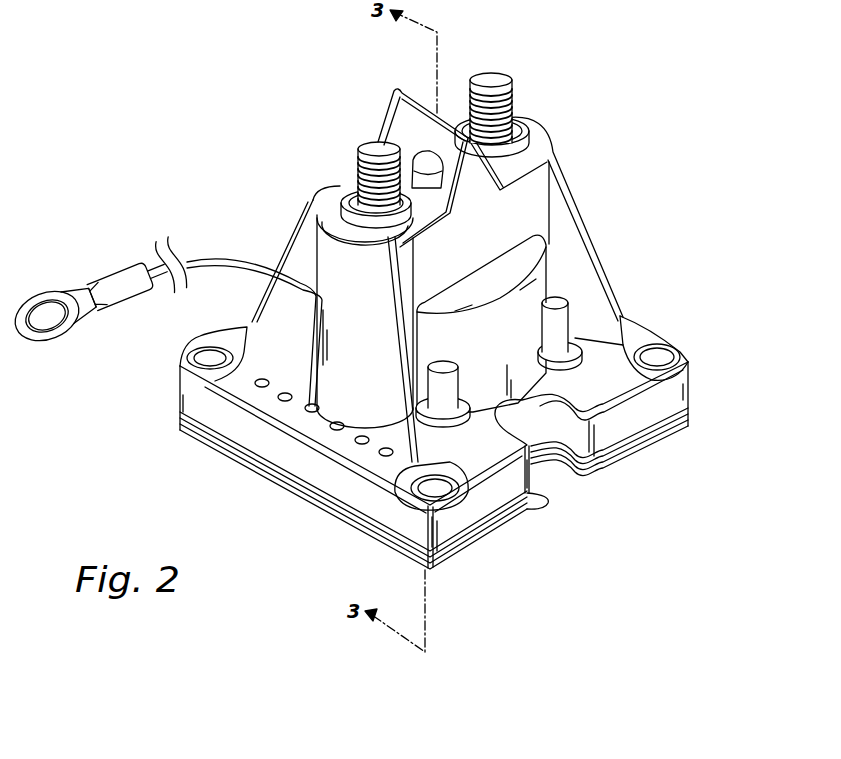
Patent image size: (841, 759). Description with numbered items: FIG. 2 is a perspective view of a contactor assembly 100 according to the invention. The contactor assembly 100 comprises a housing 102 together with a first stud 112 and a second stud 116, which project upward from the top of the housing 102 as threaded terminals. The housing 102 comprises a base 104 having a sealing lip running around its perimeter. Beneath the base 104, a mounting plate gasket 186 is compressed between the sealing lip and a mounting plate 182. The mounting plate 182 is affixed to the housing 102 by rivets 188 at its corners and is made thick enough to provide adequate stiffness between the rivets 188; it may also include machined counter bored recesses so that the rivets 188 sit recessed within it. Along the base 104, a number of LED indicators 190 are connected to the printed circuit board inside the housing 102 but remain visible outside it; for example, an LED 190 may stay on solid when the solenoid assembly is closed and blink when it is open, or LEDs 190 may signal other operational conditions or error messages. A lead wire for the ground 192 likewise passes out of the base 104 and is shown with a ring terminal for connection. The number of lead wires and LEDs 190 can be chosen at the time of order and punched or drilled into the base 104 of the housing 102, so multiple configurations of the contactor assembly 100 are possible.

The contactor assembly 100 is at (559, 125).
The housing 102 is at (572, 178).
The base 104 is at (694, 390).
The first stud 112 is at (488, 78).
The second stud 116 is at (373, 142).
The mounting plate 182 is at (630, 462).
The mounting plate gasket 186 is at (689, 415).
The rivets 188 is at (660, 355).
The LED indicators 190 is at (333, 422).
The ground 192 is at (150, 270).